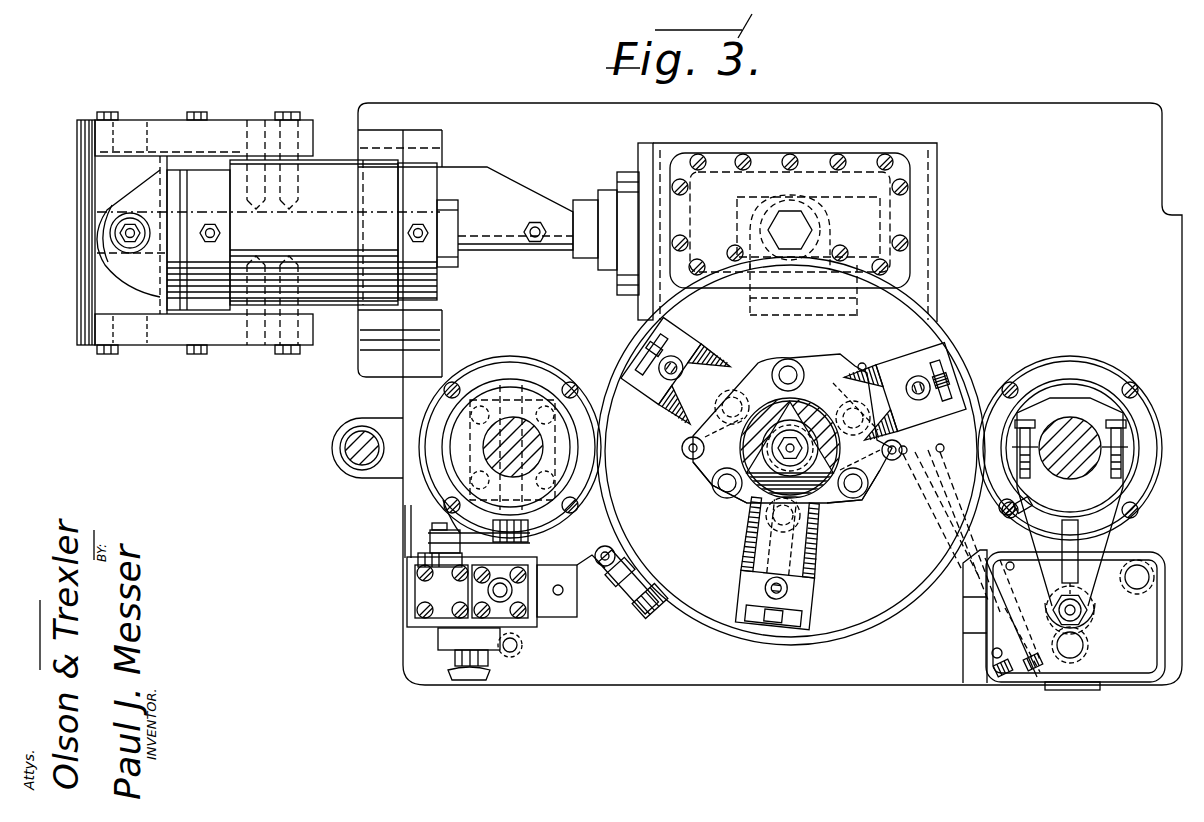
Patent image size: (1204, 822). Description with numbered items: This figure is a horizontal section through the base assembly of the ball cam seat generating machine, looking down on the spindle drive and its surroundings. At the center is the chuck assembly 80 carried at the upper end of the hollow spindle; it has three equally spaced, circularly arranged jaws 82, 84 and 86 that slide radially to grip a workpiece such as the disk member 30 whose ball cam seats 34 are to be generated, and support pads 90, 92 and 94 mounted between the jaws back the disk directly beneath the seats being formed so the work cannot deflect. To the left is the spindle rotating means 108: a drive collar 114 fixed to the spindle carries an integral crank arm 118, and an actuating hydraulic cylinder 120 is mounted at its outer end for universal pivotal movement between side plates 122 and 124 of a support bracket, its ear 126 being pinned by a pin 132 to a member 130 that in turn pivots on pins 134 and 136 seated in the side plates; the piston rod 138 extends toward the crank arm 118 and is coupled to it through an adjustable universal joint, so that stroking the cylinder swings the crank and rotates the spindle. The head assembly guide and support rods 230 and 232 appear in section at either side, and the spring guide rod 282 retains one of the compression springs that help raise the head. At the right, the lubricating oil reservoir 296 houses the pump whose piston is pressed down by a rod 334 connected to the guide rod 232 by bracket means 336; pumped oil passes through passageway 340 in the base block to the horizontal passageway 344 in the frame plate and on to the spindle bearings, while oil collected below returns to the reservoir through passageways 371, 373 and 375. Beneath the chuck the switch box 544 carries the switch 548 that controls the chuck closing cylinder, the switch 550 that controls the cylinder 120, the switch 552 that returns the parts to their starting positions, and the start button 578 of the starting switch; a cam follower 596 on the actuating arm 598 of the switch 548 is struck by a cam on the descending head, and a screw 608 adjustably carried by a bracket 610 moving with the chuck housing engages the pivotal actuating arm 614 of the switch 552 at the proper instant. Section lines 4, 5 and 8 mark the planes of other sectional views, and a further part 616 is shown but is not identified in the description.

The section line 4- 4 is at (335, 448).
The section line 5- 5 is at (62, 227).
The section line 8- 8 is at (670, 448).
The disk member 30 is at (737, 512).
The ball cam seats 34 is at (845, 500).
The chuck assembly 80 is at (700, 640).
The jaw 82 is at (940, 325).
The jaw 84 is at (810, 597).
The jaw 86 is at (607, 393).
The support pad 90 is at (872, 517).
The support pad 92 is at (716, 508).
The support pad 94 is at (813, 355).
The spindle rotating means 108 is at (318, 376).
The drive collar 114 is at (865, 333).
The crank arm 118 is at (833, 220).
The actuating hydraulic cylinder 120 is at (343, 157).
The side plate 122 is at (172, 338).
The side plate 124 is at (160, 315).
The ear 126 is at (118, 252).
The pivot member 130 is at (93, 163).
The pin 132 is at (137, 264).
The pin 134 is at (133, 352).
The pin 136 is at (127, 118).
The piston rod 138 is at (510, 213).
The head assembly guide and support rod 230 is at (513, 427).
The head assembly guide and support rod 232 is at (1073, 423).
The spring guide rod 282 is at (368, 443).
The lubricating oil reservoir 296 is at (1125, 695).
The pump actuating rod 334 is at (1075, 612).
The bracket means 336 is at (1124, 540).
The passageway 340 is at (1012, 612).
The horizontal passageway 344 is at (1009, 528).
The return passageway 371 is at (922, 444).
The return passageway 373 is at (937, 540).
The return passageway 375 is at (982, 660).
The switch box 544 is at (422, 638).
The chuck closing switch 548 is at (418, 558).
The cylinder control switch 550 is at (498, 591).
The return switch 552 is at (555, 630).
The start button 578 is at (463, 680).
The cam follower 596 is at (604, 580).
The switch actuating arm 598 is at (448, 525).
The screw 608 is at (653, 627).
The bracket 610 is at (630, 604).
The pivotal actuating arm 614 is at (612, 585).
The pivot 616 is at (612, 553).